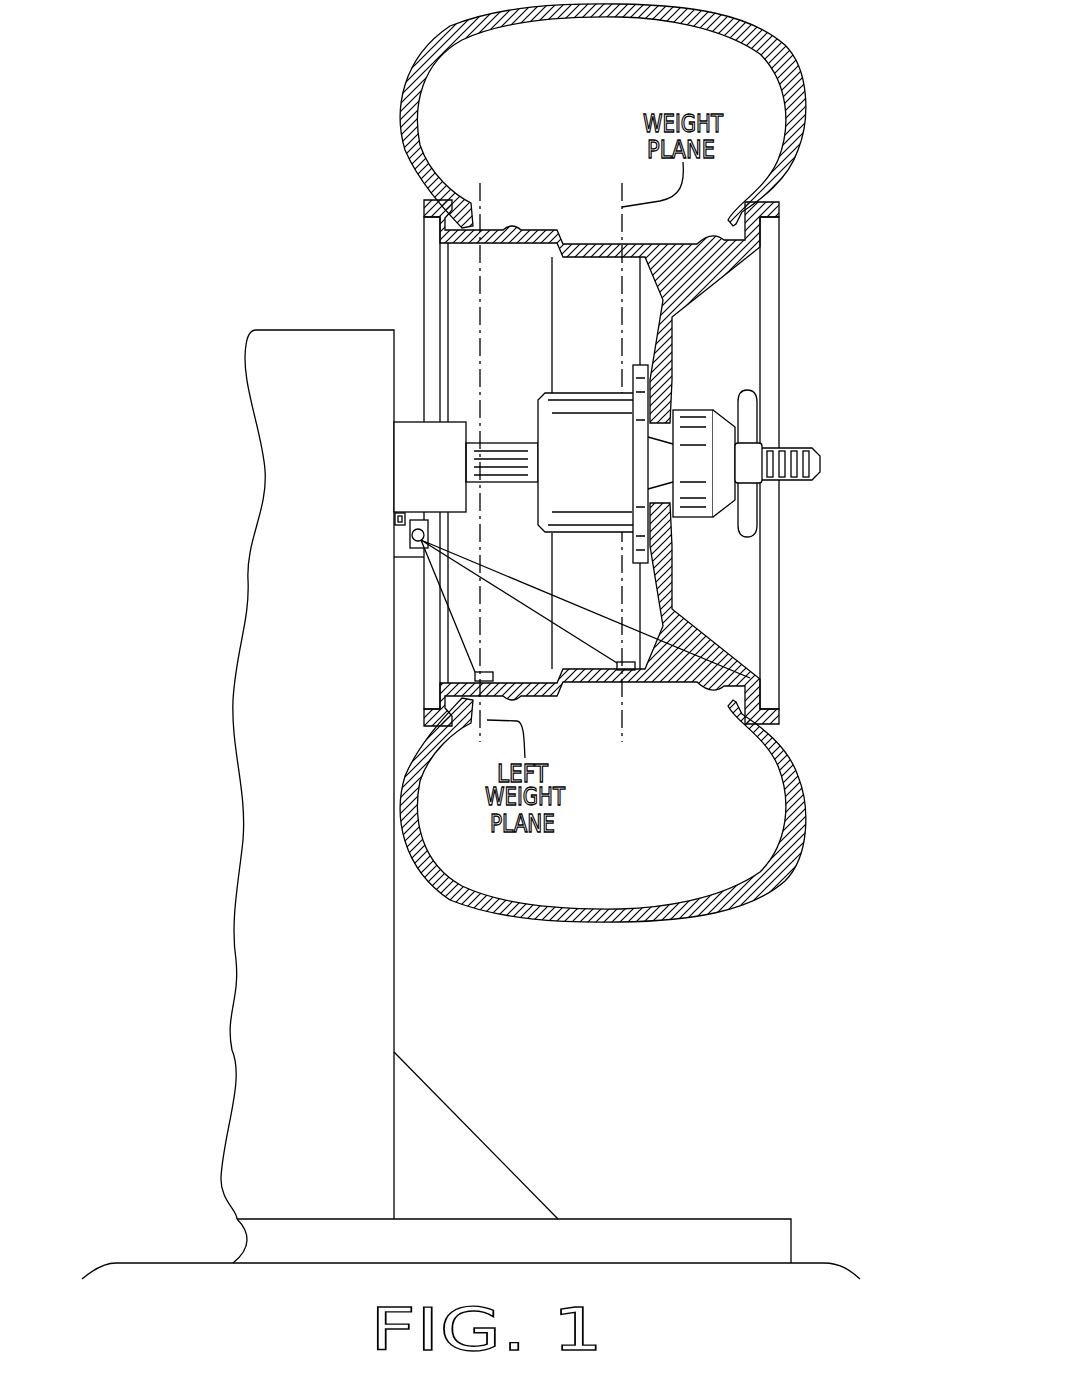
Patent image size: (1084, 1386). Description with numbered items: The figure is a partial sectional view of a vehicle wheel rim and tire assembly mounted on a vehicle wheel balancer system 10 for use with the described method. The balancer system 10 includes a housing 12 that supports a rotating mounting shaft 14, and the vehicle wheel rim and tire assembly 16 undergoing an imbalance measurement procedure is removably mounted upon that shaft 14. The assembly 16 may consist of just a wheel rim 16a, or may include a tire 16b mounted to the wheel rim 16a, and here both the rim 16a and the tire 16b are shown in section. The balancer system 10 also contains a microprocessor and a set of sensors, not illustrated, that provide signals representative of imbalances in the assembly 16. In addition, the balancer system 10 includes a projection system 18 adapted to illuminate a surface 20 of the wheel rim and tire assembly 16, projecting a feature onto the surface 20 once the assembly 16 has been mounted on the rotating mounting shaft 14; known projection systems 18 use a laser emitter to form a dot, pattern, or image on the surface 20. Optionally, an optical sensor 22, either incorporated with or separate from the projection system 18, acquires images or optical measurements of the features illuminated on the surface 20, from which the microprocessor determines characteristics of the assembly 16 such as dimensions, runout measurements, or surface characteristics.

The vehicle wheel balancer system 10 is at (198, 701).
The housing 12 is at (330, 1155).
The rotating mounting shaft 14 is at (512, 450).
The vehicle wheel rim and tire assembly 16 is at (790, 266).
The wheel rim 16a is at (780, 363).
The tire 16b is at (603, 923).
The projection system 18 is at (412, 538).
The surface 20 is at (468, 290).
The optical sensor 22 is at (395, 520).